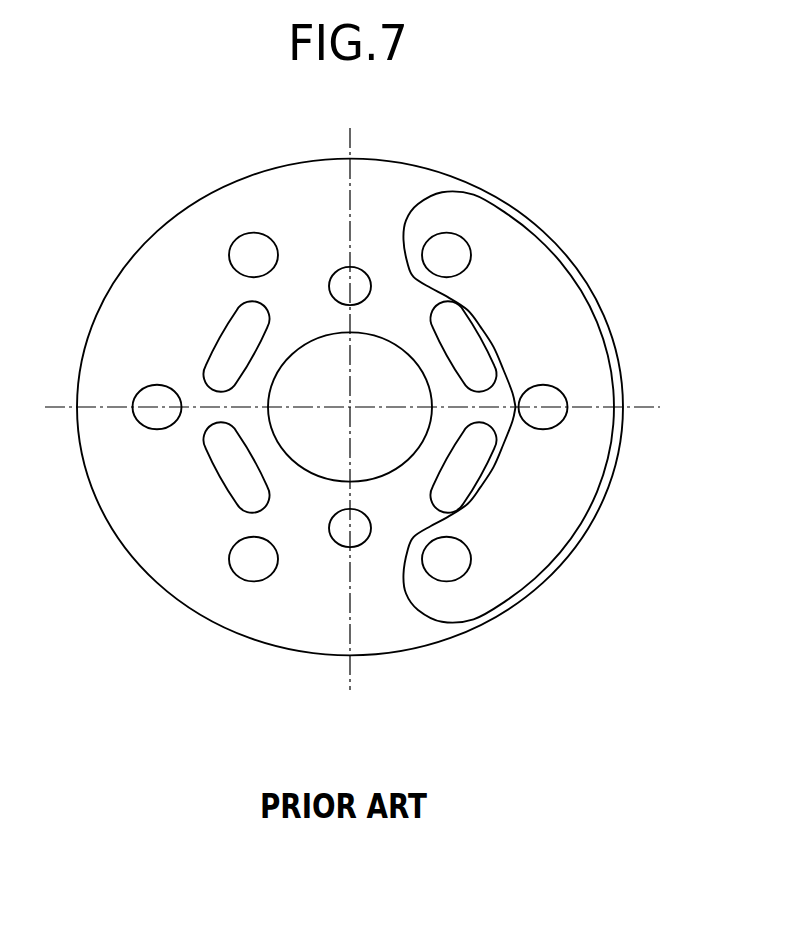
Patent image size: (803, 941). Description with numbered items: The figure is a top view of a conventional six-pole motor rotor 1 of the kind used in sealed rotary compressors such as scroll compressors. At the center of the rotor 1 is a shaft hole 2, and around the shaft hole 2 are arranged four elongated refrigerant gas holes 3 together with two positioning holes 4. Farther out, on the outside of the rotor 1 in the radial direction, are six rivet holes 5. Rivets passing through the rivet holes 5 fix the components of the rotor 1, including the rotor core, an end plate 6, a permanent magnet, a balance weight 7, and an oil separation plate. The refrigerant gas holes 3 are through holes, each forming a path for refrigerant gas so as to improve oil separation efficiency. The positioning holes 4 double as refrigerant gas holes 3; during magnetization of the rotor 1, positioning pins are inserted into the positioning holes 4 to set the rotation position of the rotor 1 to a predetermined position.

The rotor 1 is at (627, 231).
The shaft hole 2 is at (330, 388).
The refrigerant gas holes 3 is at (224, 355).
The positioning holes 4 is at (343, 278).
The rivet holes 5 is at (253, 253).
The end plate 6 is at (402, 190).
The balance weight 7 is at (568, 317).